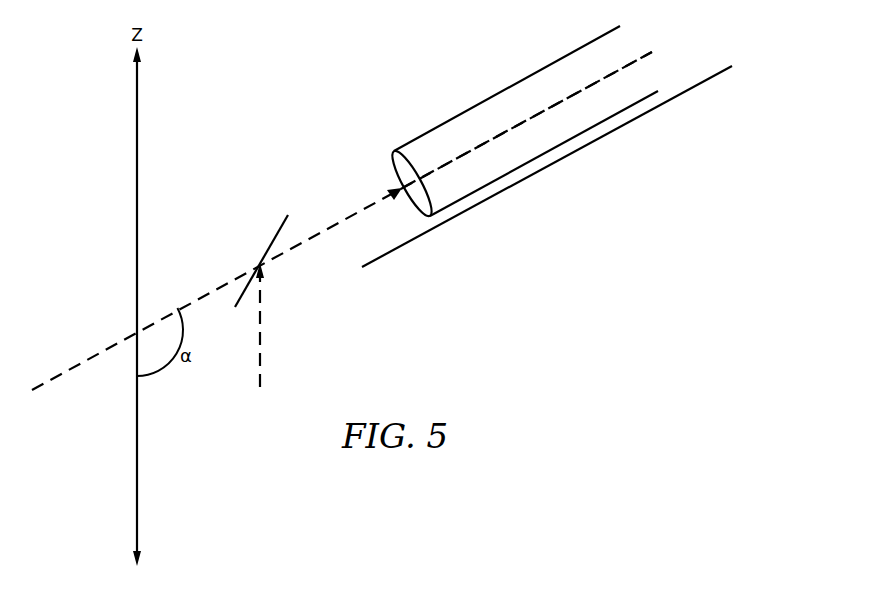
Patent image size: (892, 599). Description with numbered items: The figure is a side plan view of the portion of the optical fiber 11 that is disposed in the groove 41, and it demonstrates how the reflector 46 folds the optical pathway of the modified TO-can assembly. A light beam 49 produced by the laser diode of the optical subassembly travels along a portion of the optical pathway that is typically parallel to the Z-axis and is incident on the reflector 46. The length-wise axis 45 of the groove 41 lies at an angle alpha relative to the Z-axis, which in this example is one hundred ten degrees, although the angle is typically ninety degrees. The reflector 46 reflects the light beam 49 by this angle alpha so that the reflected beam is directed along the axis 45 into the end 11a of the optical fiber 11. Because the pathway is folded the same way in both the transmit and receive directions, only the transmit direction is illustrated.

The optical fiber 11 is at (527, 83).
The end of the optical fiber 11a is at (430, 216).
The groove 41 is at (690, 89).
The length-wise axis of the groove 45 is at (545, 109).
The reflector 46 is at (275, 233).
The light beam 49 is at (348, 219).